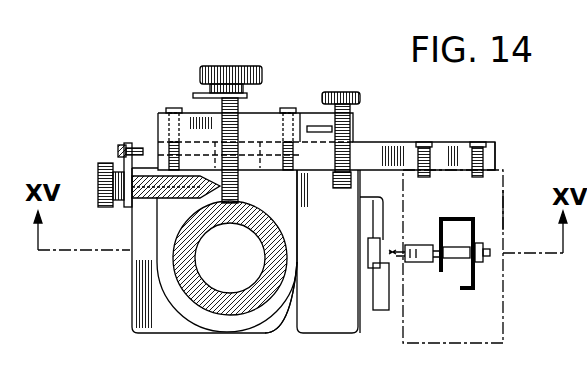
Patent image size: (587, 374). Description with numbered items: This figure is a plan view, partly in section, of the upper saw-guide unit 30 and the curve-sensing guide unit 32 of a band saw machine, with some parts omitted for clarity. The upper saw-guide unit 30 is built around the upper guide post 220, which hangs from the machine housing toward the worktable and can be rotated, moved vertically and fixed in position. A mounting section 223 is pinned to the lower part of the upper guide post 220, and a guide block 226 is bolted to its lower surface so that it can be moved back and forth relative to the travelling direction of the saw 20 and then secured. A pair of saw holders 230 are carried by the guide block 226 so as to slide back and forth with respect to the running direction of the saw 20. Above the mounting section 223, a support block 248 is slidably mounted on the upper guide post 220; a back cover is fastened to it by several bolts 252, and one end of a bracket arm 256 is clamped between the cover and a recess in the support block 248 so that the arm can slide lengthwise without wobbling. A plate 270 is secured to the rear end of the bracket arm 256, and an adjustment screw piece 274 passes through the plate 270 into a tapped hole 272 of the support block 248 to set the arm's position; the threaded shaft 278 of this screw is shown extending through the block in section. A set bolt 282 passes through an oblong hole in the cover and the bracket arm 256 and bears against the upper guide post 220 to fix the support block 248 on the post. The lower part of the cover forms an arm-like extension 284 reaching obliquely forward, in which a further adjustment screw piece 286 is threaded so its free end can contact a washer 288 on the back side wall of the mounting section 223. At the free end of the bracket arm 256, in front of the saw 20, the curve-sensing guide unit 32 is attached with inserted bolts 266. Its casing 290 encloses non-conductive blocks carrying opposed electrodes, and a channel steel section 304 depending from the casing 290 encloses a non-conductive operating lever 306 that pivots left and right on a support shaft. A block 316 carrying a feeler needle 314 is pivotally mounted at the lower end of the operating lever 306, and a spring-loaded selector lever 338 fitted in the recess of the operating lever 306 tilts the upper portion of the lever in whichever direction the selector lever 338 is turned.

The saw 20 is at (392, 262).
The upper saw-guide unit 30 is at (392, 287).
The curve-sensing guide unit 32 is at (535, 190).
The upper guide post 220 is at (270, 272).
The mounting section 223 is at (287, 320).
The guide block 226 is at (368, 298).
The saw holders 230 is at (396, 270).
The support block 248 is at (297, 210).
The bolts 252 is at (178, 104).
The bracket arm 256 is at (178, 134).
The inserted bolts 266 is at (424, 147).
The plate 270 is at (126, 165).
The tapped hole 272 is at (173, 200).
The adjustment screw piece 274 is at (145, 200).
The threaded shaft 278 is at (247, 184).
The set bolt 282 is at (240, 106).
The arm-like extension 284 is at (323, 118).
The adjustment screw piece 286 is at (354, 110).
The washer 288 is at (357, 173).
The casing 290 is at (488, 330).
The channel steel section 304 is at (477, 230).
The operating lever 306 is at (460, 259).
The feeler needle 314 is at (390, 258).
The block 316 is at (418, 247).
The selector lever 338 is at (484, 256).